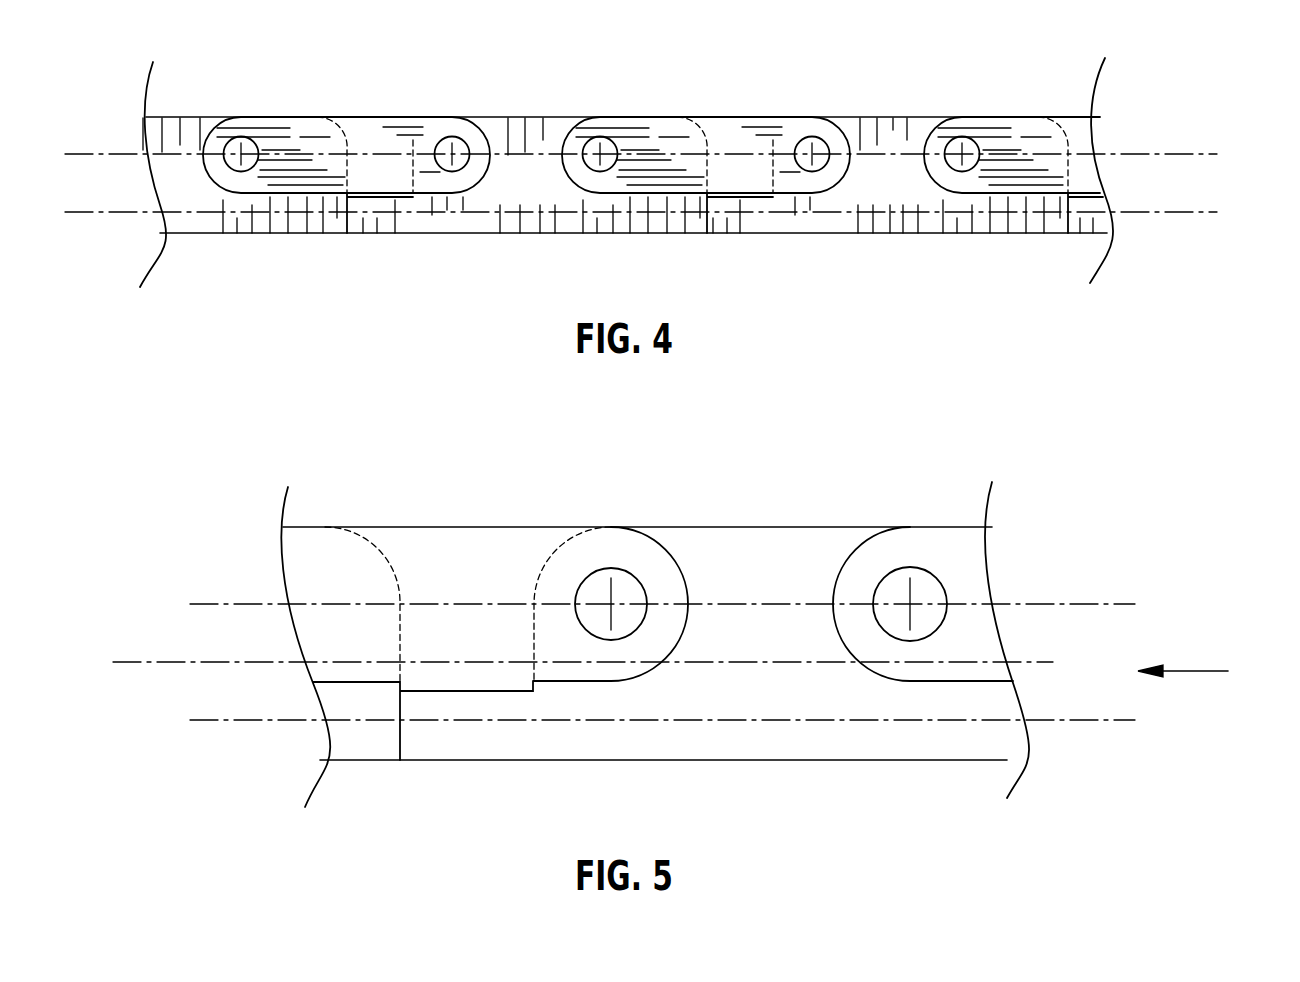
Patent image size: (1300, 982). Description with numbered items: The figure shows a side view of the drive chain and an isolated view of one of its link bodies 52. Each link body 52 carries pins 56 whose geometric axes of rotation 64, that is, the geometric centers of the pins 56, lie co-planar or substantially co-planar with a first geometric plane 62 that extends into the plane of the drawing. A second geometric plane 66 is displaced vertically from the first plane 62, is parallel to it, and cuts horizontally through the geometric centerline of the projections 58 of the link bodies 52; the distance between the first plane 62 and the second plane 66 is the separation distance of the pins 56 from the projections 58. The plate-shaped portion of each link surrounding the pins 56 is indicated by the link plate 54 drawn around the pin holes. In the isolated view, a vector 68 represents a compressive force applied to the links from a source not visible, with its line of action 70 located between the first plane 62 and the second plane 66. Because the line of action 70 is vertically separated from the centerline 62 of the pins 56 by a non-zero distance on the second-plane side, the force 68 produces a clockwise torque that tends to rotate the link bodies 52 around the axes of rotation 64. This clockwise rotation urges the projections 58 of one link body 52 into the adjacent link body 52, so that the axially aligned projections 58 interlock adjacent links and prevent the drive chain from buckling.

In FIG. 4, the link body 52 is at (188, 117).
In FIG. 5, the link body 52 is at (748, 527).
In FIG. 4, the link plate 54 is at (310, 130).
In FIG. 4, the pin 56 is at (241, 154).
In FIG. 5, the pin 56 is at (592, 568).
In FIG. 4, the projection 58 is at (357, 233).
In FIG. 5, the projection 58 is at (440, 750).
In FIG. 4, the first geometric plane 62 is at (1188, 152).
In FIG. 5, the first geometric plane 62 is at (1105, 604).
In FIG. 4, the geometric axis of rotation 64 is at (241, 154).
In FIG. 5, the geometric axis of rotation 64 is at (611, 604).
In FIG. 4, the second geometric plane 66 is at (1188, 214).
In FIG. 5, the second geometric plane 66 is at (1105, 720).
In FIG. 5, the force vector 68 is at (1197, 671).
In FIG. 5, the line of action 70 is at (180, 662).